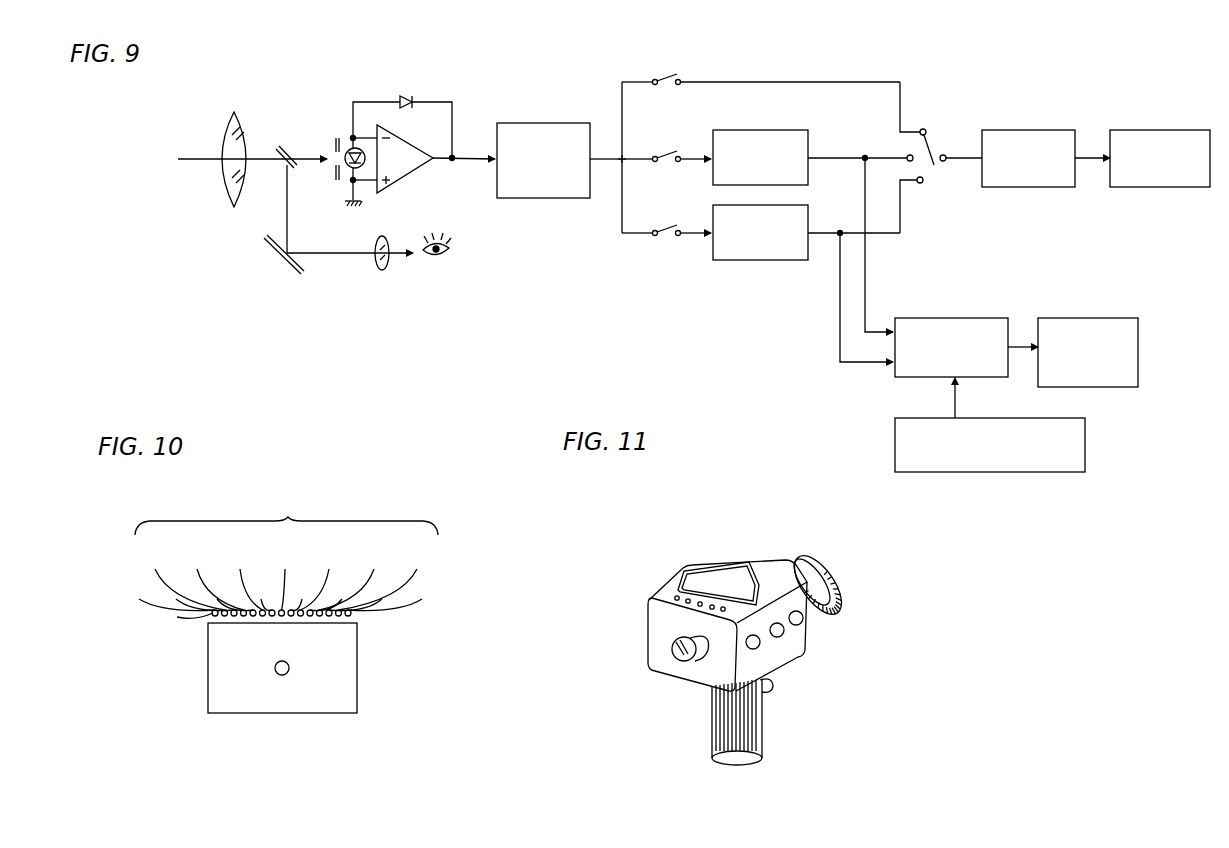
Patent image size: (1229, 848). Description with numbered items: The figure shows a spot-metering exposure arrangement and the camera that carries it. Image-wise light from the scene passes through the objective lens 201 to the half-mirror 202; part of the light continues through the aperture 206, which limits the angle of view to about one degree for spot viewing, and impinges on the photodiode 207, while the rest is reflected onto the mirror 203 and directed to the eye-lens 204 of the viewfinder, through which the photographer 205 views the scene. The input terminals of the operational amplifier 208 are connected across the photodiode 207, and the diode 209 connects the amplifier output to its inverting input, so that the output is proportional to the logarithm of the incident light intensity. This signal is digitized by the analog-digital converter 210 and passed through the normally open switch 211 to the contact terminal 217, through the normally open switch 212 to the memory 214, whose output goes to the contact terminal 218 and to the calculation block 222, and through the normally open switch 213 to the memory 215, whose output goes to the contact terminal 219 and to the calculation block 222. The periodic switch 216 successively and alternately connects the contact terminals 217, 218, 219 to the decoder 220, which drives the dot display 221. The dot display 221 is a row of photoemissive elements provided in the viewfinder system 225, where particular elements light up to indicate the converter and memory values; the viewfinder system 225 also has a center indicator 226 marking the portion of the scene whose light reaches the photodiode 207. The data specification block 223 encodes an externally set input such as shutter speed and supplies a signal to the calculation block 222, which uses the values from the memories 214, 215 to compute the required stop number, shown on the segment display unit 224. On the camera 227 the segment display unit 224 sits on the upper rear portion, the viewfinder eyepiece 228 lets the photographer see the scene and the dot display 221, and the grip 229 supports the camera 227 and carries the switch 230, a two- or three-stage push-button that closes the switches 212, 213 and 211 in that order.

In FIG. 9, the objective lens 201 is at (223, 133).
In FIG. 9, the half-mirror 202 is at (280, 150).
In FIG. 9, the mirror 203 is at (260, 279).
In FIG. 9, the eye-lens 204 is at (375, 265).
In FIG. 9, the photographer 205 is at (437, 262).
In FIG. 9, the aperture 206 is at (332, 147).
In FIG. 9, the photodiode 207 is at (353, 145).
In FIG. 9, the operational amplifier 208 is at (407, 177).
In FIG. 9, the diode 209 is at (410, 97).
In FIG. 9, the analog-digital converter 210 is at (537, 123).
In FIG. 9, the normally open switch 211 is at (668, 76).
In FIG. 9, the normally open switch 212 is at (663, 150).
In FIG. 9, the normally open switch 213 is at (663, 227).
In FIG. 9, the memory 214 is at (757, 130).
In FIG. 9, the memory 215 is at (777, 205).
In FIG. 9, the periodic switch 216 is at (945, 146).
In FIG. 9, the contact terminal 217 is at (925, 128).
In FIG. 9, the contact terminal 218 is at (907, 155).
In FIG. 9, the contact terminal 219 is at (922, 184).
In FIG. 9, the decoder 220 is at (1048, 130).
In FIG. 9, the dot display 221 is at (1155, 130).
In FIG. 10, the dot display 221 is at (282, 564).
In FIG. 9, the calculation block 222 is at (953, 318).
In FIG. 9, the data specification block 223 is at (1085, 437).
In FIG. 9, the segment display unit 224 is at (1093, 318).
In FIG. 10, the viewfinder system 225 is at (280, 700).
In FIG. 10, the center indicator 226 is at (289, 667).
In FIG. 11, the camera 227 is at (717, 558).
In FIG. 11, the viewfinder eyepiece 228 is at (672, 644).
In FIG. 11, the grip 229 is at (707, 717).
In FIG. 11, the switch 230 is at (772, 687).